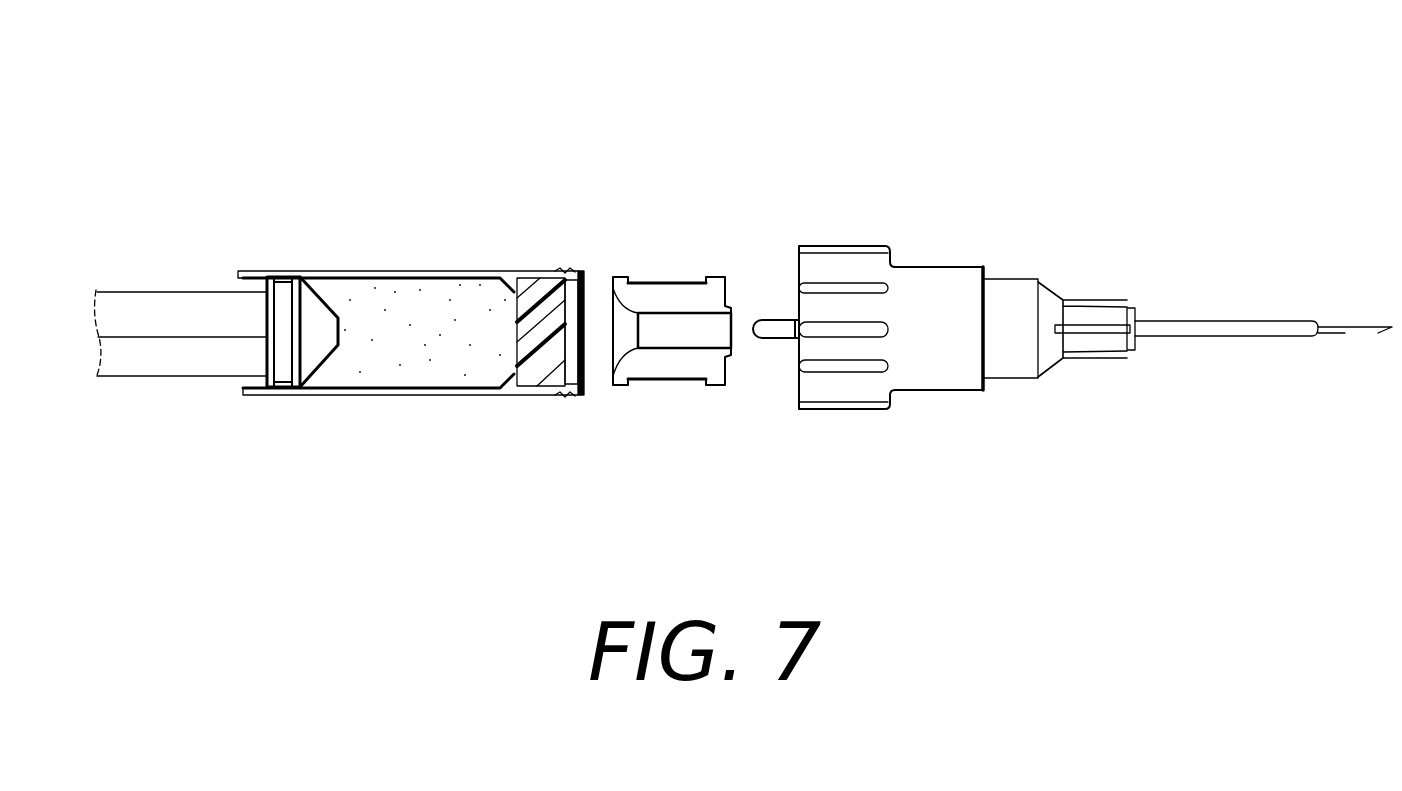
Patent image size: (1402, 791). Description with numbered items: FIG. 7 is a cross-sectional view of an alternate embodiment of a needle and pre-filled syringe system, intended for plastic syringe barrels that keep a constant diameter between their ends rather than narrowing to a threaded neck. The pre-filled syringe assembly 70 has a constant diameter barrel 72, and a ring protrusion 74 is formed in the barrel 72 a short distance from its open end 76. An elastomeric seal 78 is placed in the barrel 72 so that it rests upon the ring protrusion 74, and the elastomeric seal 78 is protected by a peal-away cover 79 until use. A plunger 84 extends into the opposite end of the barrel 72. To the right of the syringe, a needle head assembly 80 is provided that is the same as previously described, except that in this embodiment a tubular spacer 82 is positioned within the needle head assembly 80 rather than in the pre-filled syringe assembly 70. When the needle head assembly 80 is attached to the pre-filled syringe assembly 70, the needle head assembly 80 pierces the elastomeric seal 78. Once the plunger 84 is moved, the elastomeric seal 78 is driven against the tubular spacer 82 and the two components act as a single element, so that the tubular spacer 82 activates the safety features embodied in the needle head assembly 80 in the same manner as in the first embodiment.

The pre-filled syringe assembly 70 is at (323, 180).
The constant diameter barrel 72 is at (418, 395).
The ring protrusion 74 is at (441, 274).
The open end 76 is at (588, 290).
The elastomeric seal 78 is at (545, 372).
The peal-away cover 79 is at (592, 393).
The needle head assembly 80 is at (1360, 297).
The tubular spacer 82 is at (668, 368).
The plunger 84 is at (158, 358).